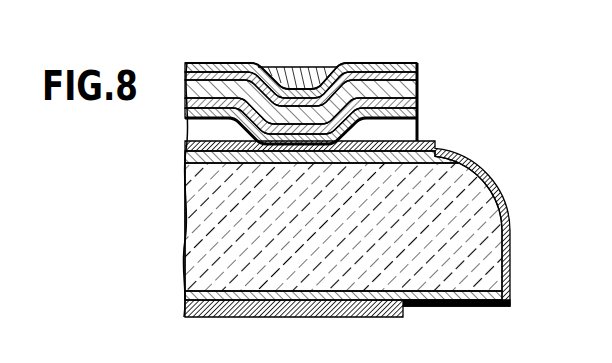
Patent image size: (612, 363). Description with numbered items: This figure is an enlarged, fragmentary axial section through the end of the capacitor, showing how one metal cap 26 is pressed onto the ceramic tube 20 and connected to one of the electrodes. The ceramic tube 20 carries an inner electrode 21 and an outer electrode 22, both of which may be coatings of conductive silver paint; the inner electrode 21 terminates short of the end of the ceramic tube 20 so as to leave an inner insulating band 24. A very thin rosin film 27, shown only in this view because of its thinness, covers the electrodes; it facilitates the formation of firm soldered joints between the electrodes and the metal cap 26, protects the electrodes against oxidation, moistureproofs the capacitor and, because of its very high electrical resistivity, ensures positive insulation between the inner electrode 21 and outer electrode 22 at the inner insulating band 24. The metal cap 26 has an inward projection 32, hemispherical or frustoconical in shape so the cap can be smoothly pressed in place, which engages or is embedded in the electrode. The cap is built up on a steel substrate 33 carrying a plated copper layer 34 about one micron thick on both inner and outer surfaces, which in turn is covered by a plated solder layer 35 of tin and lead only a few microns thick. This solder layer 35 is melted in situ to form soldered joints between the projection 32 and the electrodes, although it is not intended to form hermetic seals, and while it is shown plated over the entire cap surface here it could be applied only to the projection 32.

The ceramic tube 20 is at (195, 209).
The inner electrode 21 is at (179, 295).
The outer electrode 22 is at (191, 157).
The inner insulating band 24 is at (437, 308).
The metal cap 26 is at (210, 58).
The rosin film 27 is at (468, 163).
The projection 32 is at (294, 78).
The steel substrate 33 is at (413, 91).
The plated copper layer 34 is at (414, 75).
The plated solder layer 35 is at (400, 63).